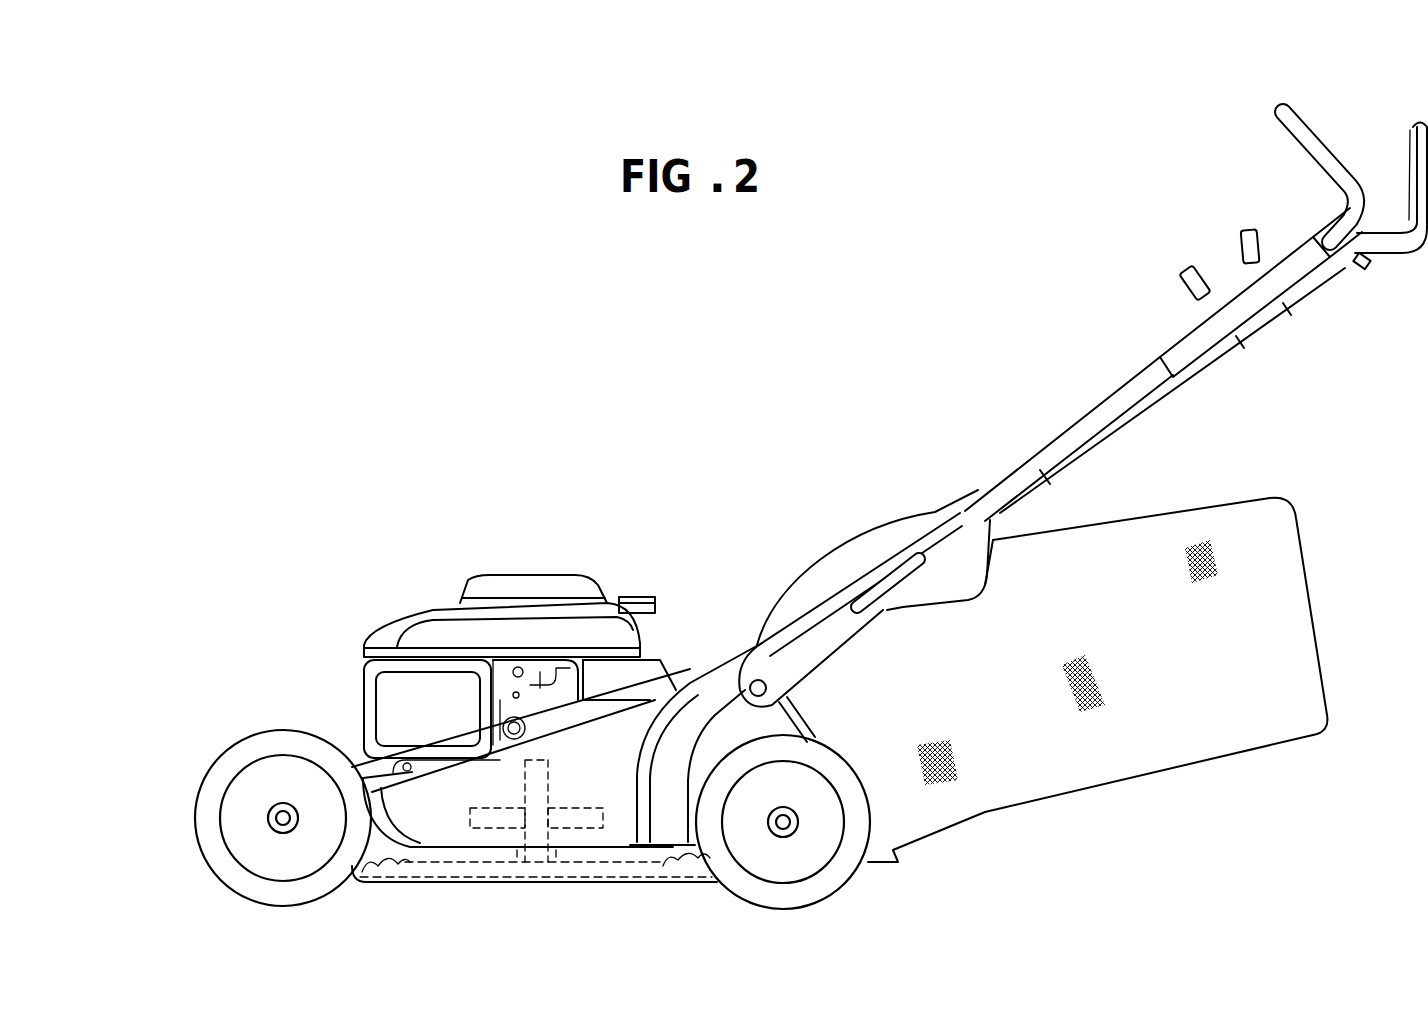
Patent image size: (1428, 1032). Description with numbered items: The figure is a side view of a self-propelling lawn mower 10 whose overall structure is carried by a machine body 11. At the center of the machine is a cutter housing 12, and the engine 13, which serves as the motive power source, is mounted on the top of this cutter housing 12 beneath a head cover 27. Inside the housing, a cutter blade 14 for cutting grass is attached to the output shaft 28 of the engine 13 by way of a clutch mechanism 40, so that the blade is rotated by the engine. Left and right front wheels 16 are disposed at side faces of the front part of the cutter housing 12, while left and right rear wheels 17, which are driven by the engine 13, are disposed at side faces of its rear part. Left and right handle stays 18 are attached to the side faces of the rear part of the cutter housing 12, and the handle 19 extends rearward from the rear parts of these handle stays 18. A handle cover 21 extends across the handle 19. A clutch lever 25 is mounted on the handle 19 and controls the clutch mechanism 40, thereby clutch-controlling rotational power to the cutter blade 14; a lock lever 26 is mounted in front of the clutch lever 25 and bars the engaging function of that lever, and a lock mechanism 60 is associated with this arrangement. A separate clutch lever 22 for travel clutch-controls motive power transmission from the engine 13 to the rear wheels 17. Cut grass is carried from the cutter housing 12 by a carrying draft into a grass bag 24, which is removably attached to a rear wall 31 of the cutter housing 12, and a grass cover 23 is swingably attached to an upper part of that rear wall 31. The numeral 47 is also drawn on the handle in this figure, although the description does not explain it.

The lawn mower 10 is at (304, 188).
The machine body 11 is at (357, 470).
The cutter housing 12 is at (462, 755).
The engine 13 is at (533, 683).
The cutter blade 14 is at (455, 853).
The front wheels 16 is at (237, 750).
The rear wheels 17 is at (862, 762).
The handle stays 18 is at (662, 690).
The handle 19 is at (1085, 410).
The handle cover 21 is at (1168, 338).
The clutch lever for travel 22 is at (1420, 108).
The grass cover 23 is at (893, 520).
The grass bag 24 is at (1255, 498).
The clutch lever 25 is at (1415, 140).
The lock lever 26 is at (1243, 230).
The head cover 27 is at (435, 607).
The output shaft 28 is at (497, 670).
The rear wall 31 is at (815, 718).
The clutch mechanism 40 is at (587, 795).
The handle tube 47 is at (1043, 475).
The lock mechanism 60 is at (1207, 258).